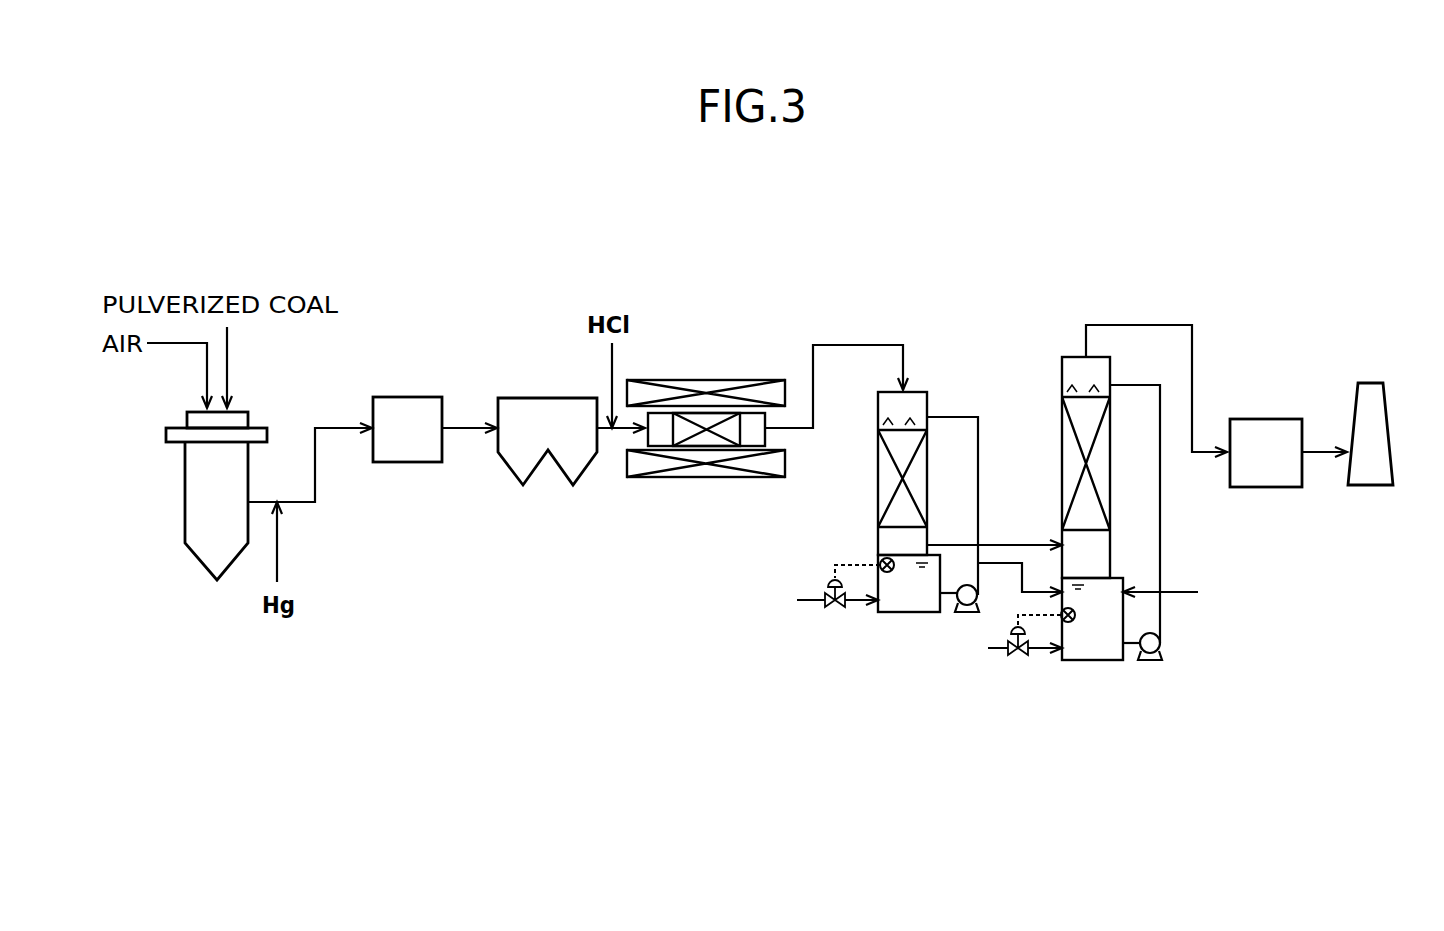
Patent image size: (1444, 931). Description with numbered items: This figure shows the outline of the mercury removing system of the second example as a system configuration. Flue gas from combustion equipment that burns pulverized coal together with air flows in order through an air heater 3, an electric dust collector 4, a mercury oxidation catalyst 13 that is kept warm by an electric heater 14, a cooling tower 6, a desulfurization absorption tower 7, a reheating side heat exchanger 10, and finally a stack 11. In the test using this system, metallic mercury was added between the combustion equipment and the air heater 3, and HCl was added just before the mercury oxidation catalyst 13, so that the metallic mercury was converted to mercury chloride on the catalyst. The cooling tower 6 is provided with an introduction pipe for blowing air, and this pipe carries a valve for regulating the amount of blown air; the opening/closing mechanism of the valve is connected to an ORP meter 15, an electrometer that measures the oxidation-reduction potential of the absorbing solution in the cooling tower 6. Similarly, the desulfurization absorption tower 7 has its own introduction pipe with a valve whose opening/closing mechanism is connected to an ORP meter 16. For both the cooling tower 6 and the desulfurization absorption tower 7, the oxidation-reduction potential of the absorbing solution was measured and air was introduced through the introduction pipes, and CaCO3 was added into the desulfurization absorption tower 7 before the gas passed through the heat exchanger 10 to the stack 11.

The air heater 3 is at (399, 397).
The dust collector 4 is at (522, 398).
The mercury oxidation catalyst 13 is at (700, 447).
The electric heater 14 is at (705, 380).
The cooling tower 6 is at (889, 612).
The desulfurization absorption tower 7 is at (1062, 375).
The reheating side heat exchanger 10 is at (1259, 419).
The stack 11 is at (1390, 425).
The ORP meter 15 is at (890, 573).
The ORP meter 16 is at (1073, 622).